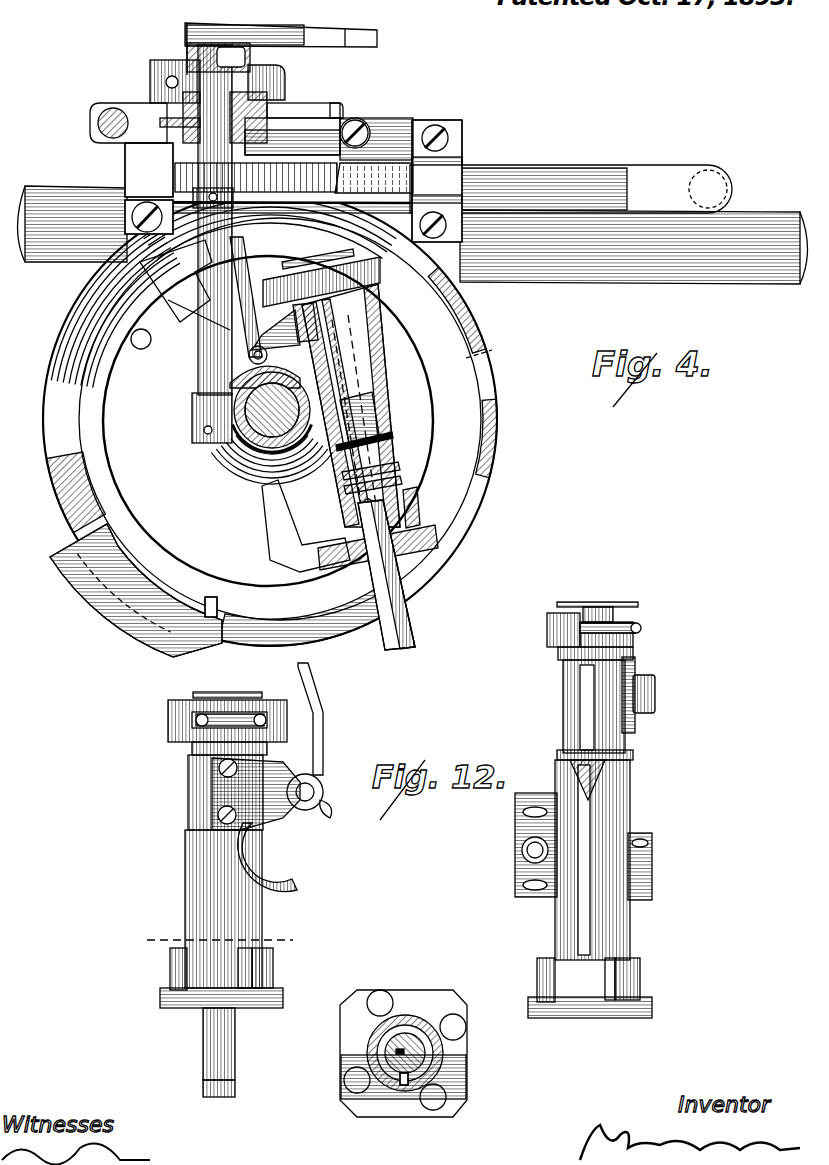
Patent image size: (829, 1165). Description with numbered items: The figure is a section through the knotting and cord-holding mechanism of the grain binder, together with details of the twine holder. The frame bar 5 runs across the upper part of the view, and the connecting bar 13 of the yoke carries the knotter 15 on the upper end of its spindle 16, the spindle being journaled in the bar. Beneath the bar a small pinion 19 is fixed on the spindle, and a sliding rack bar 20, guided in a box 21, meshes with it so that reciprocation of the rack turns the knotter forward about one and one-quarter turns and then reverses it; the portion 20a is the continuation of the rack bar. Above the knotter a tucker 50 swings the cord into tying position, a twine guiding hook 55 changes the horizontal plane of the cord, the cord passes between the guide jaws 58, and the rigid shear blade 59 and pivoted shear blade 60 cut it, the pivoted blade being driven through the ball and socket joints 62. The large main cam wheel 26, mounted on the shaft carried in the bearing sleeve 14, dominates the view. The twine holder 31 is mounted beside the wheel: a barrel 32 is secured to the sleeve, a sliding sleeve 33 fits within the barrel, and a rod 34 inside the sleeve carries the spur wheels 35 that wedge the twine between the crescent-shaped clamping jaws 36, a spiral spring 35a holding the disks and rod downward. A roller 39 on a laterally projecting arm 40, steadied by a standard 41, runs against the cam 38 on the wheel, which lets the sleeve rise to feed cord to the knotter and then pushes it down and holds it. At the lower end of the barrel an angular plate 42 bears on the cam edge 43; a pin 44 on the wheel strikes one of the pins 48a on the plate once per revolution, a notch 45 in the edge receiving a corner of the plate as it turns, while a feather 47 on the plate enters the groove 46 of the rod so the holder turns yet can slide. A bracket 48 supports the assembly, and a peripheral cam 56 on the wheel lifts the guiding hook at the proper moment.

In FIG. 4, the bar 5 is at (614, 278).
In FIG. 4, the connecting bar 13 is at (150, 100).
In FIG. 4, the bearing sleeve 14 is at (250, 455).
In FIG. 4, the knotter 15 is at (250, 53).
In FIG. 4, the spindle 16 is at (200, 361).
In FIG. 4, the pinion 19 is at (172, 177).
In FIG. 4, the rack bar 20 is at (340, 170).
In FIG. 4, the rack bar extension 20a is at (582, 168).
In FIG. 4, the box 21 is at (412, 126).
In FIG. 4, the cam wheel 26 is at (270, 419).
In FIG. 4, the twine holder 31 is at (351, 405).
In FIG. 12, the twine holder 31 is at (387, 745).
In FIG. 4, the barrel 32 is at (380, 416).
In FIG. 12, the barrel 32 is at (186, 887).
In FIG. 4, the sliding sleeve 33 is at (385, 440).
In FIG. 12, the sliding sleeve 33 is at (622, 742).
In FIG. 4, the rod 34 is at (395, 616).
In FIG. 12, the rod 34 is at (492, 1060).
In FIG. 4, the spur wheels 35 is at (320, 262).
In FIG. 12, the spur wheels 35 is at (242, 692).
In FIG. 4, the spiral spring 35a is at (392, 468).
In FIG. 4, the clamping jaws 36 is at (321, 282).
In FIG. 12, the clamping jaws 36 is at (265, 706).
In FIG. 4, the cam 38 is at (272, 358).
In FIG. 4, the roller 39 is at (250, 356).
In FIG. 12, the roller 39 is at (306, 810).
In FIG. 4, the arm 40 is at (232, 340).
In FIG. 12, the arm 40 is at (648, 664).
In FIG. 4, the standard 41 is at (235, 270).
In FIG. 12, the standard 41 is at (323, 757).
In FIG. 12, the angular plate 42 is at (185, 1009).
In FIG. 4, the cam edge 43 is at (478, 376).
In FIG. 4, the pin 44 is at (141, 350).
In FIG. 4, the notch 45 is at (125, 308).
In FIG. 12, the groove 46 is at (385, 1080).
In FIG. 12, the feather 47 is at (394, 1053).
In FIG. 4, the bracket 48 is at (418, 512).
In FIG. 4, the pins 48a is at (411, 507).
In FIG. 12, the pins 48a is at (650, 988).
In FIG. 4, the tucker 50 is at (281, 40).
In FIG. 4, the twine guiding hook 55 is at (285, 73).
In FIG. 4, the peripheral cam 56 is at (136, 592).
In FIG. 4, the guide jaws 58 is at (344, 107).
In FIG. 4, the shear blade 59 is at (295, 116).
In FIG. 4, the shear blade 60 is at (292, 136).
In FIG. 4, the ball and socket joints 62 is at (113, 108).